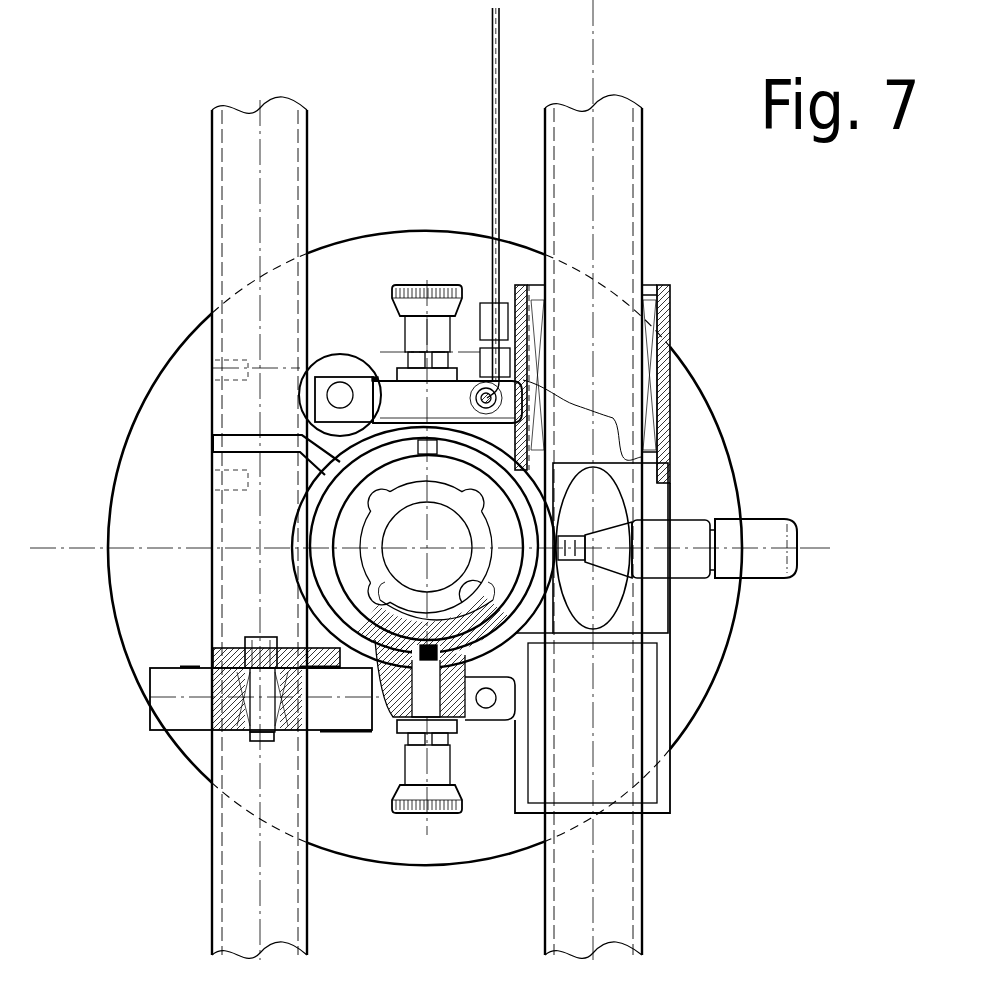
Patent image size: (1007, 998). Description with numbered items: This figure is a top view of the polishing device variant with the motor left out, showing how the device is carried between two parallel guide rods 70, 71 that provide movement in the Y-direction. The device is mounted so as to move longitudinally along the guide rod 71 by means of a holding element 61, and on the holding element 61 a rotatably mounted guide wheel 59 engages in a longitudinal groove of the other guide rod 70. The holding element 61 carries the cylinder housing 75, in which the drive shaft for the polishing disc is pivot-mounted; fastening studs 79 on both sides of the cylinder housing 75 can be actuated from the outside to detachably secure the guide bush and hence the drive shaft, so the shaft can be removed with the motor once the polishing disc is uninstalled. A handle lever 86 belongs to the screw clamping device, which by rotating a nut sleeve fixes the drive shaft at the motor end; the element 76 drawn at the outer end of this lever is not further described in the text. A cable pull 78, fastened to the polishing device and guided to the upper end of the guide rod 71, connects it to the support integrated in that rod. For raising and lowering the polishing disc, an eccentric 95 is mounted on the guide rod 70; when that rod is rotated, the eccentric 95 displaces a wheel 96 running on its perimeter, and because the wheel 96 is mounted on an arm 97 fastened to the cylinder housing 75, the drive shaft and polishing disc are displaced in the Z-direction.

The guide rod 70 is at (245, 222).
The guide rod 71 is at (612, 258).
The cable pull 78 is at (497, 92).
The fastening stud 79 is at (410, 285).
The guide wheel 59 is at (302, 364).
The holding element 61 is at (675, 386).
The handle lever 86 is at (682, 537).
The handle 76 is at (768, 535).
The arm 97 is at (213, 655).
The eccentric 95 is at (165, 680).
The wheel 96 is at (245, 718).
The cylinder housing 75 is at (373, 668).